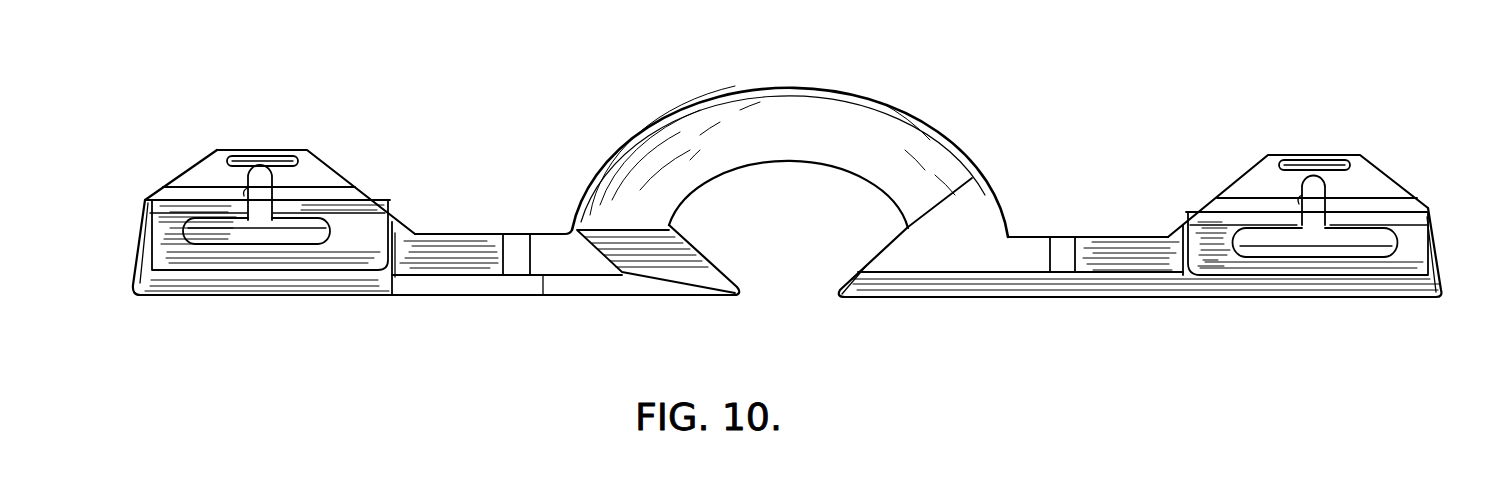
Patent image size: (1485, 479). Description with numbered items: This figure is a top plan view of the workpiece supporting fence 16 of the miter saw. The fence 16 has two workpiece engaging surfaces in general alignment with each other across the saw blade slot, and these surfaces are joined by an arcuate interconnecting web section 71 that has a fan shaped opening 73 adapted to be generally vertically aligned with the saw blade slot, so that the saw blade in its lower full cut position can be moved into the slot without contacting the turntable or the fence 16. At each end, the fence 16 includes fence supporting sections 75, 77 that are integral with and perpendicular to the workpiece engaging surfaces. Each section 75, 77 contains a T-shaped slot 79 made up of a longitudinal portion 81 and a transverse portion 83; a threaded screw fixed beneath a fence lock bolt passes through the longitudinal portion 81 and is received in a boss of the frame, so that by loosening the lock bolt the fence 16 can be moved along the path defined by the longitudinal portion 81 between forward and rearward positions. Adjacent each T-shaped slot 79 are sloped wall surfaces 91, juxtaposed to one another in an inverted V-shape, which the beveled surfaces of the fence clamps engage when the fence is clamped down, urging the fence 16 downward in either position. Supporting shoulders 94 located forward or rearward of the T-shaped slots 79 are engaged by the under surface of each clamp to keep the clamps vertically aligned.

The workpiece supporting fence 16 is at (1222, 303).
The arcuate interconnecting web section 71 is at (848, 80).
The fan shaped opening 73 is at (815, 172).
The fence supporting section 75 is at (1380, 183).
The fence supporting section 77 is at (333, 180).
The T-shaped slot 79 is at (280, 186).
The longitudinal portion 81 is at (250, 178).
The transverse portion 83 is at (184, 228).
The sloped wall 91 is at (168, 195).
The supporting shoulder 94 is at (243, 152).